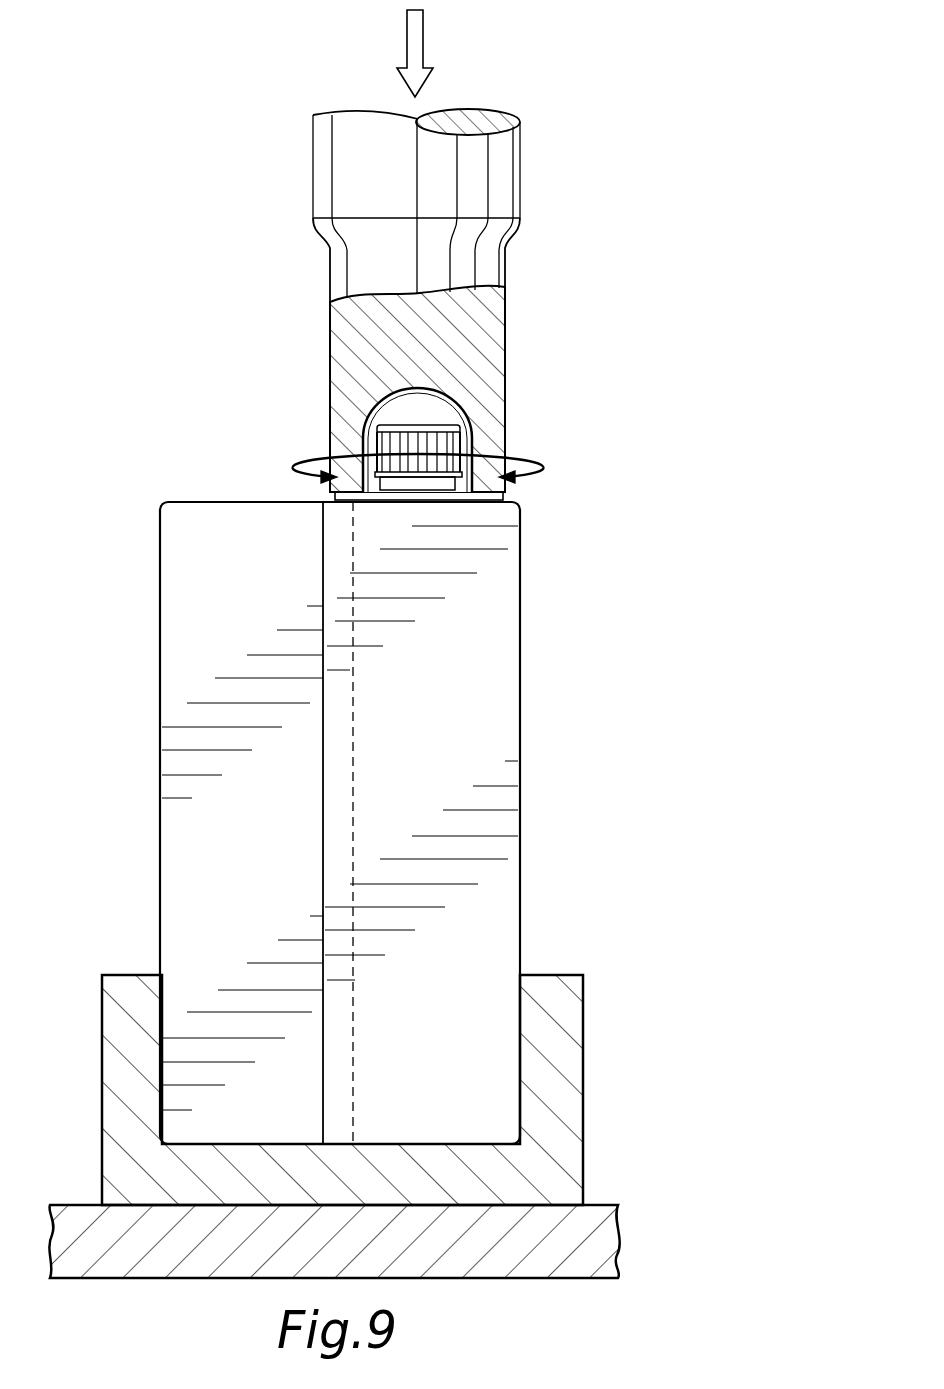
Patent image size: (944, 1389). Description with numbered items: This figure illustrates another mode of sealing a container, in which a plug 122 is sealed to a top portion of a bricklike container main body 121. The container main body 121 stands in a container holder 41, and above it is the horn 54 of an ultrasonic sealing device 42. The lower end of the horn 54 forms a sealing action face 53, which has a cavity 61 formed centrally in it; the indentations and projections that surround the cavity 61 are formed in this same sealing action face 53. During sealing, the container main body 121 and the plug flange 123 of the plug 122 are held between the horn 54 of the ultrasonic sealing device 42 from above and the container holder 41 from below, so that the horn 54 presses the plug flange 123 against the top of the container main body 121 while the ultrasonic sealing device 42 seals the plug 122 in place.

The container holder 41 is at (563, 1087).
The ultrasonic sealing device 42 is at (285, 161).
The sealing action face 53 is at (350, 496).
The horn 54 is at (345, 325).
The cavity 61 is at (450, 405).
The container main body 121 is at (462, 710).
The plug 122 is at (462, 440).
The plug flange 123 is at (500, 497).